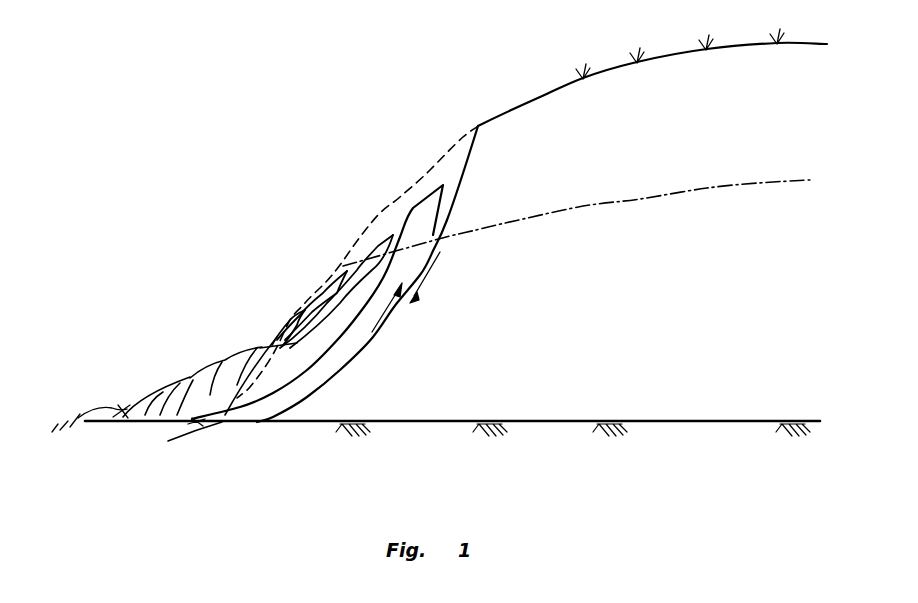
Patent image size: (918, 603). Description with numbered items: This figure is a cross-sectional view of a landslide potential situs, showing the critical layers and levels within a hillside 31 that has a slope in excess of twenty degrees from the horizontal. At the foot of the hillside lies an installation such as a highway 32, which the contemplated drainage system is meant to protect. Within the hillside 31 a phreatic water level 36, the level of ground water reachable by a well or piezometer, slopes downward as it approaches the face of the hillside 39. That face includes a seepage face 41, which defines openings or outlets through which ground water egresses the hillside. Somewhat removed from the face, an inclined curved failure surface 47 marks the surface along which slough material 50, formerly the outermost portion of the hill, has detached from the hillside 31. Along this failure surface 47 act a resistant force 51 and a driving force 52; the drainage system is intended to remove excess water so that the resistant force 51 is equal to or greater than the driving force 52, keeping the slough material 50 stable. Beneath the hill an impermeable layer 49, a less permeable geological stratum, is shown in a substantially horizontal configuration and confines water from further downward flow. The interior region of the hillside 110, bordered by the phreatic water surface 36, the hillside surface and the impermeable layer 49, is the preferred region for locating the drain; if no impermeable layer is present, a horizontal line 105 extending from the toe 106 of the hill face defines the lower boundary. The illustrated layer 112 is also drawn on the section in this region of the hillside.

The hillside 31 is at (517, 105).
The highway 32 is at (125, 410).
The phreatic water level 36 is at (616, 199).
The face of the hillside 39 is at (330, 272).
The seepage face 41 is at (305, 318).
The failure surface 47 is at (383, 328).
The impermeable layer 49 is at (620, 421).
The slough material 50 is at (212, 378).
The resistant force 51 is at (408, 304).
The driving force 52 is at (437, 254).
The horizontal line 105 is at (430, 421).
The toe 106 is at (222, 423).
The interior region of the hillside 110 is at (640, 297).
The soil layer 112 is at (292, 346).